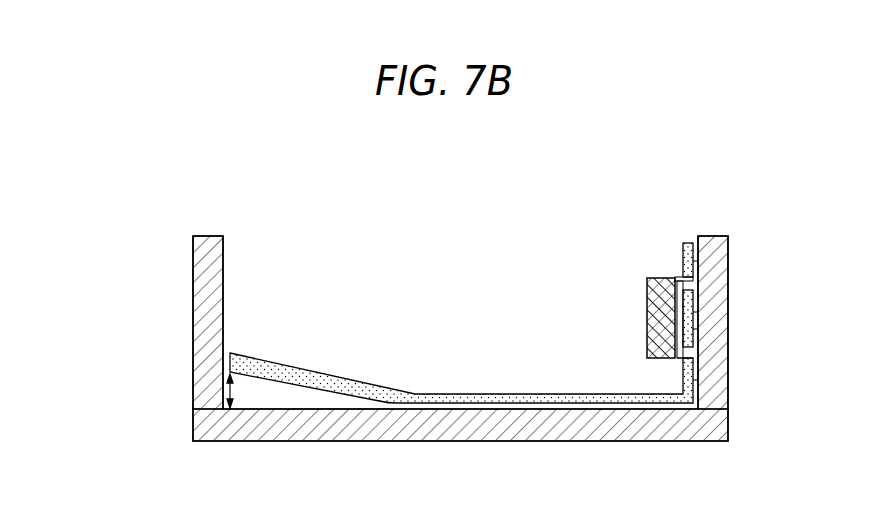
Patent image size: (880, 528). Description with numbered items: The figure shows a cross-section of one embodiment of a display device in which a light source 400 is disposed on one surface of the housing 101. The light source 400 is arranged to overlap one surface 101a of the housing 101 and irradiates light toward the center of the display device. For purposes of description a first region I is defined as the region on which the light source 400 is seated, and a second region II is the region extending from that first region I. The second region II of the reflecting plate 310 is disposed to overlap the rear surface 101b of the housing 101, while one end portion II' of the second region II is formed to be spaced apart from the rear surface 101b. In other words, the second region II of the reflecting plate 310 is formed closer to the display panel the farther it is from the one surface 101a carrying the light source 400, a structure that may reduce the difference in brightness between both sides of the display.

The housing 101 is at (459, 359).
The one surface of the housing 101a is at (718, 269).
The rear surface of the housing 101b is at (442, 425).
The reflecting plate 310 is at (687, 243).
The light source 400 is at (661, 278).
The first region I is at (693, 373).
The second region II is at (531, 442).
The one end portion of the second region II' is at (289, 430).